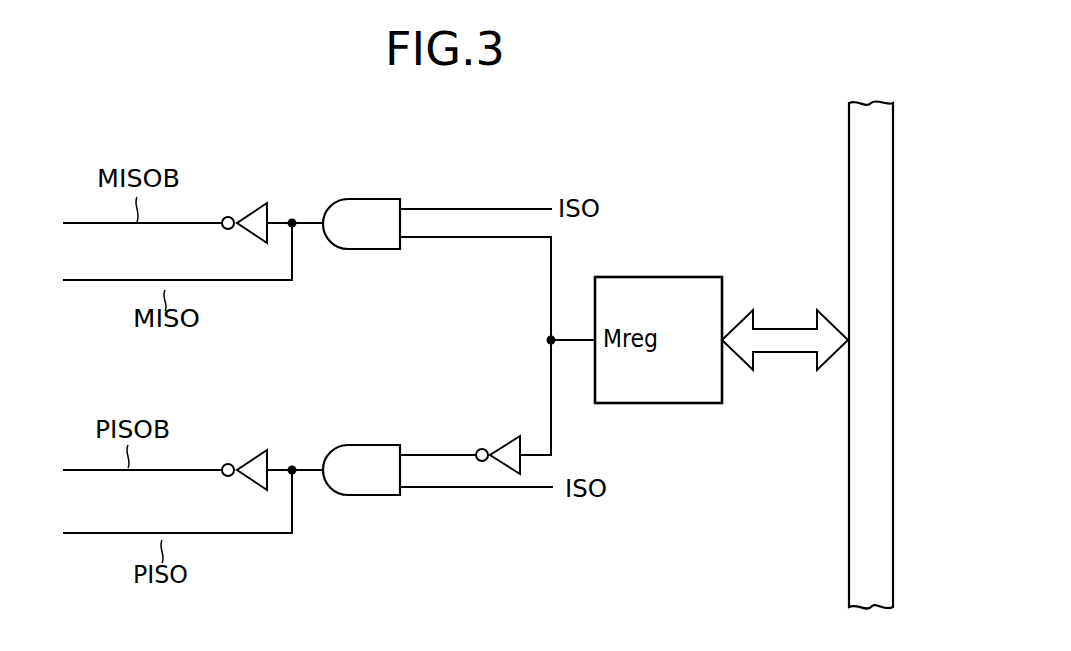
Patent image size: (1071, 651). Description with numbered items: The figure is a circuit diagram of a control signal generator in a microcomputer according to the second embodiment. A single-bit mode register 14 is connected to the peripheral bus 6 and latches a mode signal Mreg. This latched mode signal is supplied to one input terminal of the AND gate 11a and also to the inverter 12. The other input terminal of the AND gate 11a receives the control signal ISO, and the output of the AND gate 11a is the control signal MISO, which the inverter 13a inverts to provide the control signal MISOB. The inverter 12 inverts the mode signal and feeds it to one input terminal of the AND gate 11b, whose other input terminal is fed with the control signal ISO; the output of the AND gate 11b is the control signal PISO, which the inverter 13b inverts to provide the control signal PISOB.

The inverter 13a is at (247, 203).
The AND gate 11a is at (371, 198).
The single-bit mode register 14 is at (674, 276).
The inverter 12 is at (501, 437).
The inverter 13b is at (247, 450).
The AND gate 11b is at (372, 497).
The peripheral bus 6 is at (893, 190).